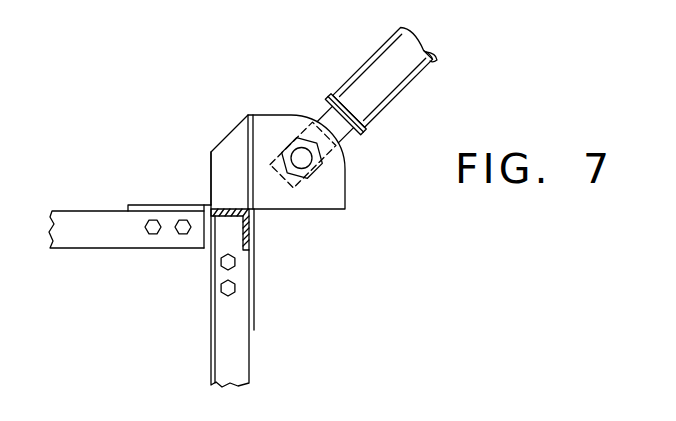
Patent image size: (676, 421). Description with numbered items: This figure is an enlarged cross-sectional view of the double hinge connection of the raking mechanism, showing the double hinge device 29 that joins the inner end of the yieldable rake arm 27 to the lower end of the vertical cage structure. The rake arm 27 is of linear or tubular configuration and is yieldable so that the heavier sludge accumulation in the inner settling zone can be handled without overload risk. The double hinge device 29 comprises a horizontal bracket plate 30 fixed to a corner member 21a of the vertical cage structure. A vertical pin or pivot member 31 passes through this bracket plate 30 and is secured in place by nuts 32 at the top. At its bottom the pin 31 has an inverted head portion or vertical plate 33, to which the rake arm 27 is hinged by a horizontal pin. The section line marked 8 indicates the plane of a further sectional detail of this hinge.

The section line 8- 8 is at (475, 132).
The corner member 21a is at (243, 232).
The yieldable rake arm 27 is at (383, 83).
The double hinge device 29 is at (358, 153).
The horizontal bracket plate 30 is at (345, 185).
The vertical pin or pivot member 31 is at (300, 152).
The nuts 32 is at (287, 148).
The inverted head portion or vertical plate 33 is at (270, 162).